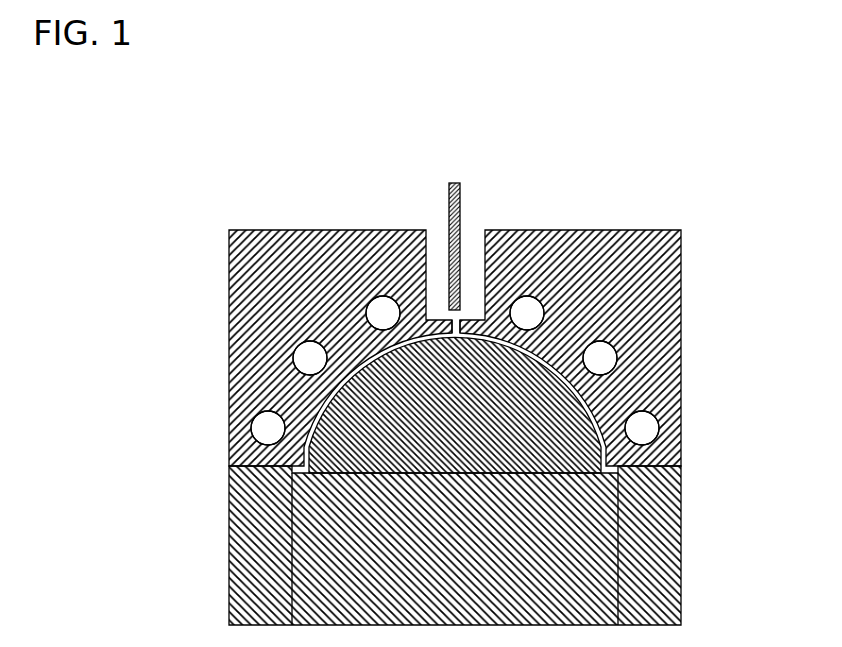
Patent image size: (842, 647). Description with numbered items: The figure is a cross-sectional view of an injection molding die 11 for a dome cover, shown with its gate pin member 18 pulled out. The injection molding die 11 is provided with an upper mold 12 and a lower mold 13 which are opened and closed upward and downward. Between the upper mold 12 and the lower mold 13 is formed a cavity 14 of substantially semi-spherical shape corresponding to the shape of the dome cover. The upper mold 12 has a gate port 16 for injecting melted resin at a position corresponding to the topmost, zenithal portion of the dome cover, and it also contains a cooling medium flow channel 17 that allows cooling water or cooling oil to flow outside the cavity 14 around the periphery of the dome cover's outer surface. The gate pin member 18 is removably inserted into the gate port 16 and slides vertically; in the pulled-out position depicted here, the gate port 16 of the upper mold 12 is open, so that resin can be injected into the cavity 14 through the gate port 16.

The injection molding die 11 is at (652, 142).
The upper mold 12 is at (680, 329).
The lower mold 13 is at (681, 521).
The cavity 14 is at (393, 348).
The gate port 16 is at (455, 322).
The cooling medium flow channel 17 is at (262, 421).
The gate pin member 18 is at (461, 192).